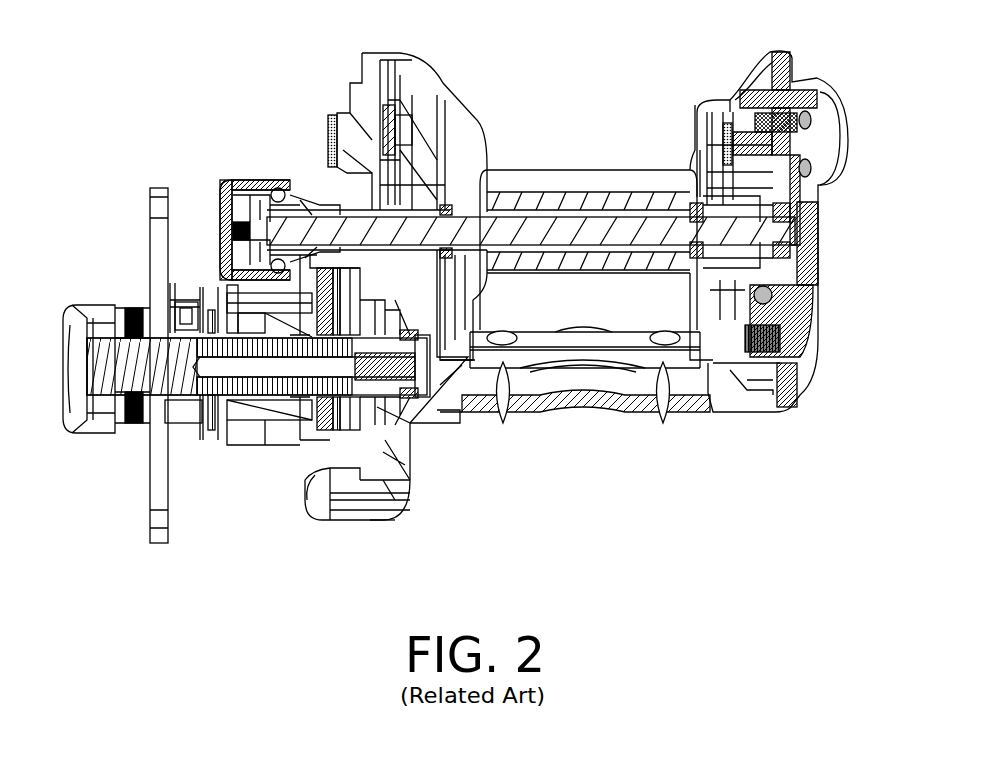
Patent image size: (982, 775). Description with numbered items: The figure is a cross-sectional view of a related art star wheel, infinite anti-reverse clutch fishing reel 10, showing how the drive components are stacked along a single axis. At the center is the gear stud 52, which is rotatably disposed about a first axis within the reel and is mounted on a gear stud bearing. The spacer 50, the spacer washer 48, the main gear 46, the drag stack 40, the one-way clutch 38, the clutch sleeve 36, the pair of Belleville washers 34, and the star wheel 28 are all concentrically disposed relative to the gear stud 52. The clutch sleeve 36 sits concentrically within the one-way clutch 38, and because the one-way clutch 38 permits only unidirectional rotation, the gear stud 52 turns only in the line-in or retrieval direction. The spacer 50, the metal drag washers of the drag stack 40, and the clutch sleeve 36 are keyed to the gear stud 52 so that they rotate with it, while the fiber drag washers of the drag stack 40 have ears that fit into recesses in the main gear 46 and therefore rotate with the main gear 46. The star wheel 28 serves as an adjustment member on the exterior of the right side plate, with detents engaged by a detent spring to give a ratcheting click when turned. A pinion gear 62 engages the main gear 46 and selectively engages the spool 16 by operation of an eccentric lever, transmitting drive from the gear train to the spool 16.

The fishing reel 10 is at (226, 76).
The spool 16 is at (492, 203).
The star wheel 28 is at (150, 228).
The Belleville washers 34 is at (203, 400).
The clutch sleeve 36 is at (232, 290).
The one-way clutch 38 is at (263, 423).
The drag stack 40 is at (373, 533).
The main gear 46 is at (382, 518).
The spacer washer 48 is at (383, 490).
The spacer 50 is at (385, 452).
The gear stud 52 is at (167, 413).
The pinion gear 62 is at (316, 216).